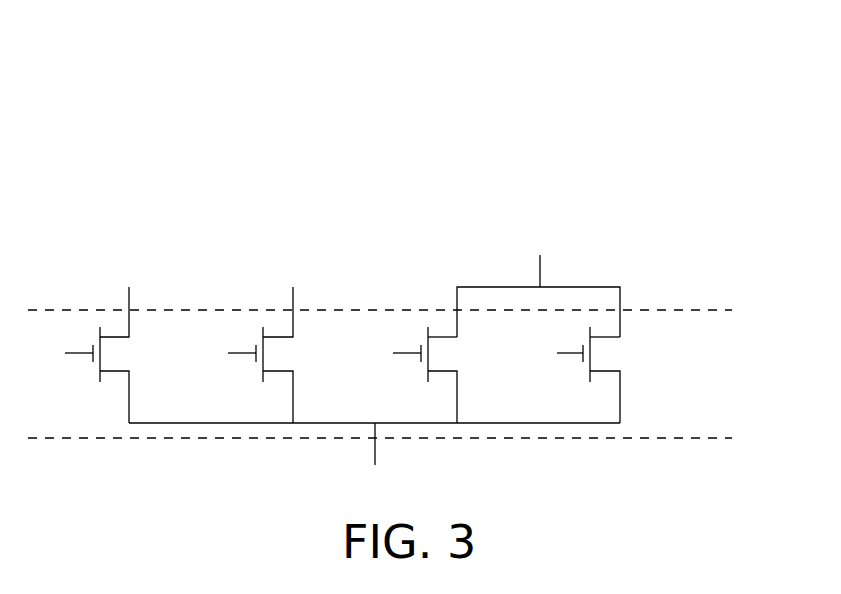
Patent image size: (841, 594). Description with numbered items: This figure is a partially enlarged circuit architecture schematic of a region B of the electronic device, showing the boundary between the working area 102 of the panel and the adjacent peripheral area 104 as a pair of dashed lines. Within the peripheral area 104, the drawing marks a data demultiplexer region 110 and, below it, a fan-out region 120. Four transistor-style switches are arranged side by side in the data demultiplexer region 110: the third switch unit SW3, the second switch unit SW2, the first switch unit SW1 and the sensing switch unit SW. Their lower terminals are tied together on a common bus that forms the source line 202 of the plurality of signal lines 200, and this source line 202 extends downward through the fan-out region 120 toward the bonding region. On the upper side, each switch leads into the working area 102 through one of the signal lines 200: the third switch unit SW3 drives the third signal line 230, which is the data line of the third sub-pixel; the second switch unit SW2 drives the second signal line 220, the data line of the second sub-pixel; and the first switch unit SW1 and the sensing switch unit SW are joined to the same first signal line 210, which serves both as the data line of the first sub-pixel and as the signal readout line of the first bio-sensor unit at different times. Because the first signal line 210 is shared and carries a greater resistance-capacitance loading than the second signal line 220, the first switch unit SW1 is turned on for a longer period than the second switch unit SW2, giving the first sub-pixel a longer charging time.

The working area 102 is at (723, 157).
The peripheral area 104 is at (723, 493).
The data demultiplexer region 110 is at (654, 312).
The fan-out region 120 is at (654, 440).
The signal lines 200 is at (330, 333).
The source line 202 is at (375, 449).
The first signal line 210 is at (541, 265).
The second signal line 220 is at (294, 301).
The third signal line 230 is at (131, 301).
The sensing switch unit SW is at (578, 364).
The first switch unit SW1 is at (413, 364).
The second switch unit SW2 is at (250, 364).
The third switch unit SW3 is at (85, 364).
The region B is at (657, 100).